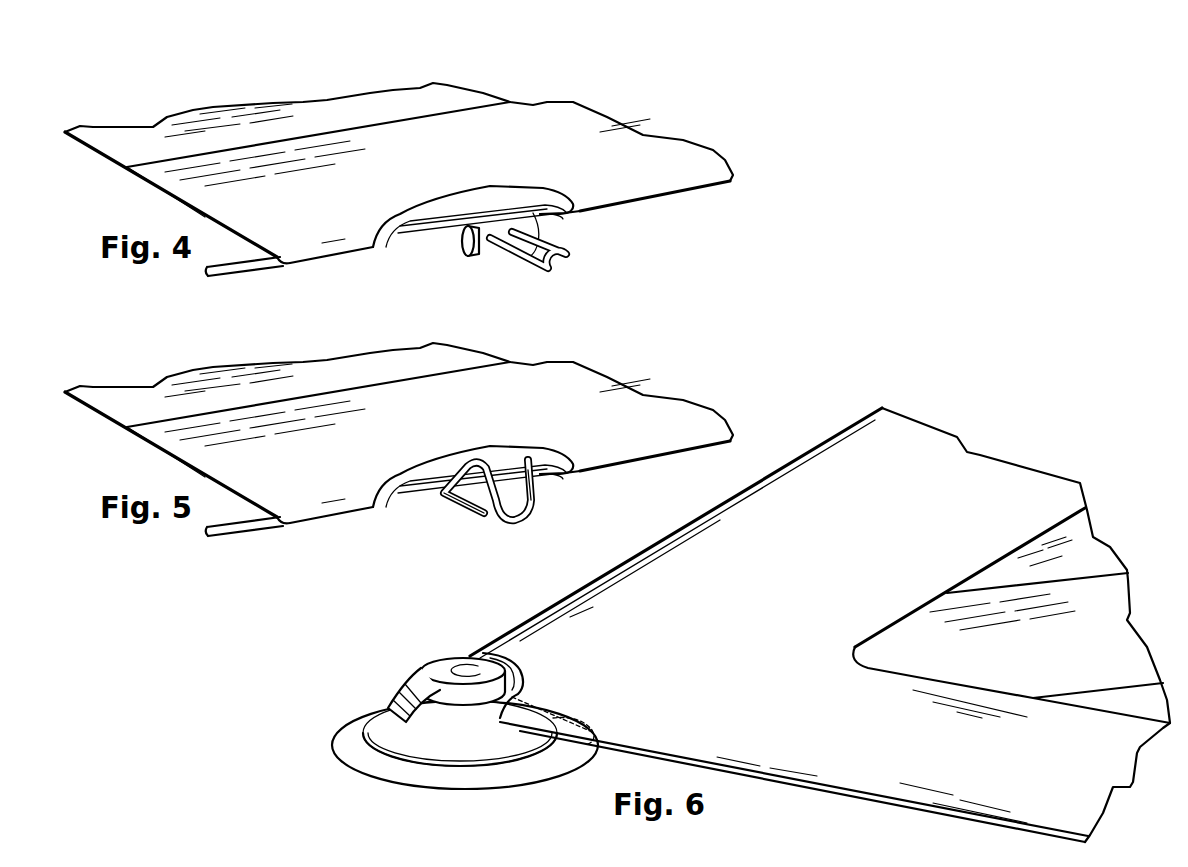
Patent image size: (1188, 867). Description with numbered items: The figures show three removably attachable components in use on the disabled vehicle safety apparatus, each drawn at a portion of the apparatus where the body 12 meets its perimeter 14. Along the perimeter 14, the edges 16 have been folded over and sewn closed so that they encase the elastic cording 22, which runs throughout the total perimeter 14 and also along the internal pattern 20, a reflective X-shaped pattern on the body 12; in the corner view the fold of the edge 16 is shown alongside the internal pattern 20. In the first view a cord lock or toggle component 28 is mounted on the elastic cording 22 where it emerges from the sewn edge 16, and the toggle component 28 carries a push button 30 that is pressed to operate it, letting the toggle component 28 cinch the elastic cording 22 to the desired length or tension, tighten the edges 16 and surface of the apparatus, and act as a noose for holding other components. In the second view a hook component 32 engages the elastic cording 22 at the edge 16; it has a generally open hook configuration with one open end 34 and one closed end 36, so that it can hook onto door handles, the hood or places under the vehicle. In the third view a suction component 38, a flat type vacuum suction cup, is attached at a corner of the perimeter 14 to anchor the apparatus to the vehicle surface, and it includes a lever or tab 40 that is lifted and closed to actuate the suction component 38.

In FIG. 4, the body 12 is at (298, 127).
In FIG. 5, the body 12 is at (327, 378).
In FIG. 6, the body 12 is at (1090, 563).
In FIG. 4, the perimeter 14 is at (534, 158).
In FIG. 5, the perimeter 14 is at (526, 424).
In FIG. 6, the perimeter 14 is at (918, 541).
In FIG. 4, the edges 16 is at (663, 208).
In FIG. 5, the edges 16 is at (636, 470).
In FIG. 6, the edges 16 is at (829, 432).
In FIG. 6, the internal pattern 20 is at (1076, 671).
In FIG. 4, the elastic cording 22 is at (232, 268).
In FIG. 5, the elastic cording 22 is at (227, 530).
In FIG. 6, the elastic cording 22 is at (490, 708).
In FIG. 4, the toggle component 28 is at (495, 264).
In FIG. 4, the push button 30 is at (461, 241).
In FIG. 5, the hook component 32 is at (481, 528).
In FIG. 5, the open end 34 is at (538, 495).
In FIG. 5, the closed end 36 is at (442, 504).
In FIG. 6, the suction component 38 is at (399, 786).
In FIG. 6, the lever or tab 40 is at (420, 687).